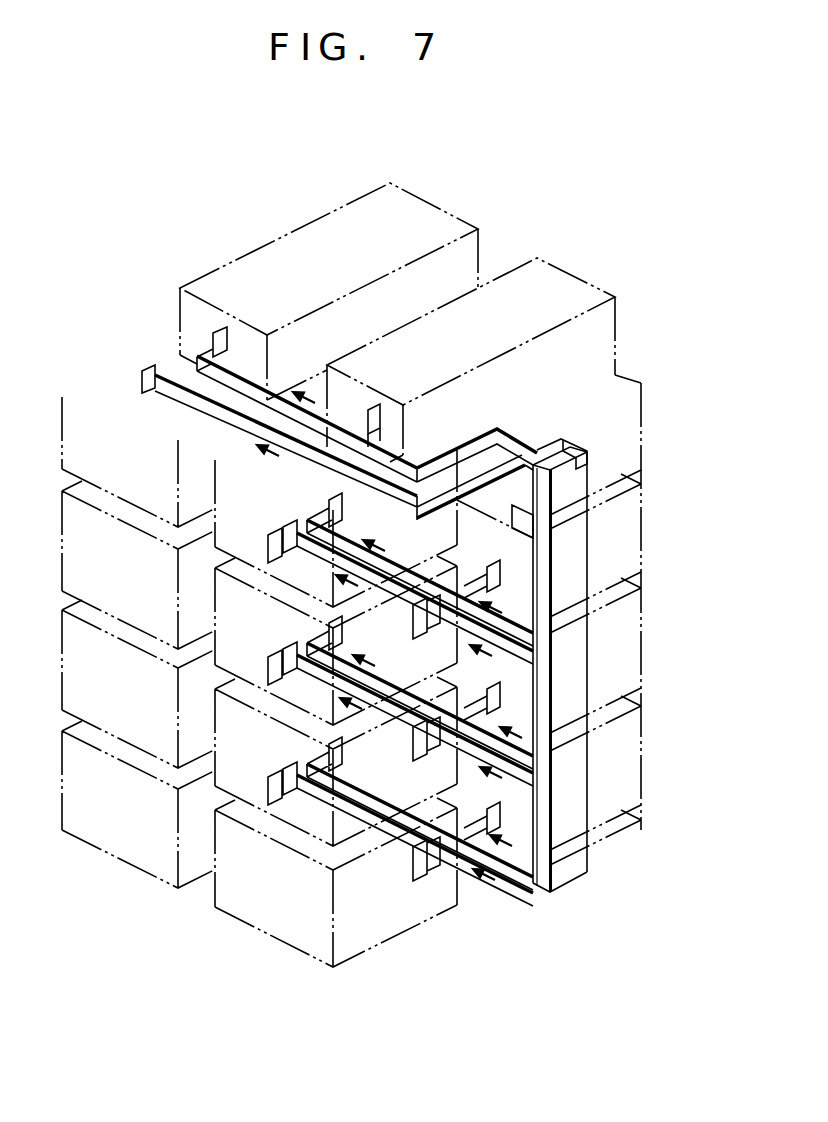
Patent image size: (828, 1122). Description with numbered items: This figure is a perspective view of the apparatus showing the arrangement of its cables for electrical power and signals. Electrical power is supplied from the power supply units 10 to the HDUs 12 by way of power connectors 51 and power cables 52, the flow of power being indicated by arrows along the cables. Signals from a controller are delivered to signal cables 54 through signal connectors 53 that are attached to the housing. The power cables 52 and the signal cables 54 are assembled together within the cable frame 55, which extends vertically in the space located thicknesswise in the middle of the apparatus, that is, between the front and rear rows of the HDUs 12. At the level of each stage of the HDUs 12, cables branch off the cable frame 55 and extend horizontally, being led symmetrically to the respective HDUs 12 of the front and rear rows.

The rectangular module 10 is at (413, 193).
The frame 12 is at (640, 494).
The engagement tab 51 is at (220, 327).
The connecting strap section 52 is at (470, 440).
The end tab 53 is at (150, 366).
The strap 54 is at (187, 396).
The vertical support bar 55 is at (585, 542).